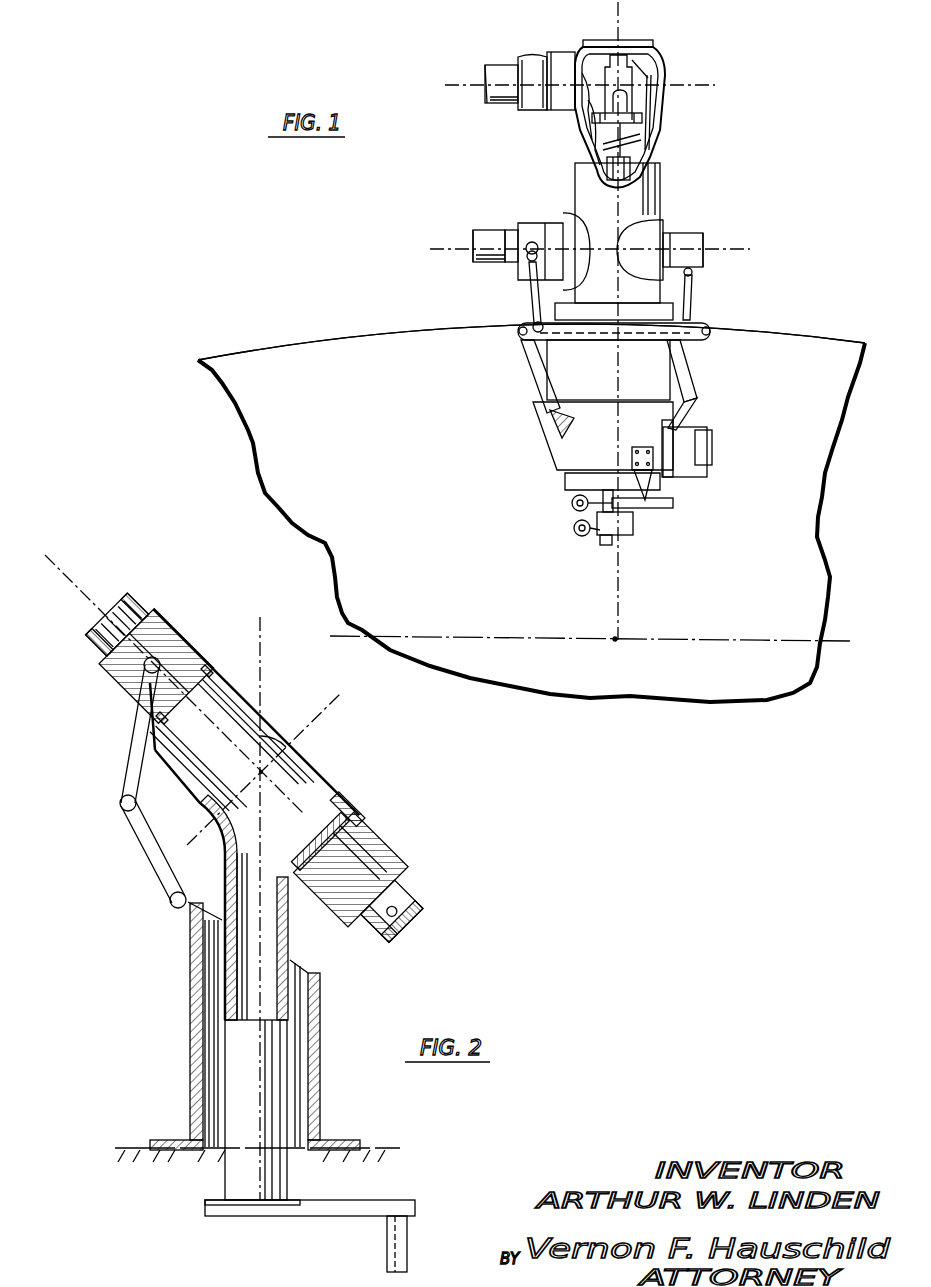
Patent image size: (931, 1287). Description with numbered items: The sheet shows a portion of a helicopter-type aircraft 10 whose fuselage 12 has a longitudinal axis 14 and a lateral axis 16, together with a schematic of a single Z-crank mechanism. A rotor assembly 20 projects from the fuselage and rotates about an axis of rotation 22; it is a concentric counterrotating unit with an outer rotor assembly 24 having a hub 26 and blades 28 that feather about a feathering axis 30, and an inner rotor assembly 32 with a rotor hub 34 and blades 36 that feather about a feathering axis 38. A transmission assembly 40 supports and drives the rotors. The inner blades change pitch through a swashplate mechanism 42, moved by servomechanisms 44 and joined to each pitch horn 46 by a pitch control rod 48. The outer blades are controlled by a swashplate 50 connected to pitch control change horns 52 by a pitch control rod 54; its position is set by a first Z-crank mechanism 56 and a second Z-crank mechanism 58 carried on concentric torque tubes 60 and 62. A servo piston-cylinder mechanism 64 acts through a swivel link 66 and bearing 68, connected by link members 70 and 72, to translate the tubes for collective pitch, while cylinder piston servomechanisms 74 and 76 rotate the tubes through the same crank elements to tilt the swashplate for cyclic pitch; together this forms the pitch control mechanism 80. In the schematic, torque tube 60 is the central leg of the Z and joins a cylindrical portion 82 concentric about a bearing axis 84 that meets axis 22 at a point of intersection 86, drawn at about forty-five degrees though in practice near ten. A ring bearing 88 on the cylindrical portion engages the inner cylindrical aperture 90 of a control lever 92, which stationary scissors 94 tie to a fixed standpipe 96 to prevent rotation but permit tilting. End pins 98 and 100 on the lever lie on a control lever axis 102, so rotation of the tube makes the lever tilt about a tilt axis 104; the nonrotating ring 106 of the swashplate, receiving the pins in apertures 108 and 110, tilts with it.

In FIG. 1, the aircraft 10 is at (775, 328).
In FIG. 1, the fuselage 12 is at (377, 440).
In FIG. 1, the longitudinal axis 14 is at (674, 640).
In FIG. 1, the lateral axis 16 is at (610, 642).
In FIG. 1, the rotor assembly 20 is at (712, 64).
In FIG. 1, the axis of rotation 22 is at (622, 32).
In FIG. 2, the axis of rotation 22 is at (257, 636).
In FIG. 1, the outer rotor assembly 24 is at (496, 58).
In FIG. 1, the hub 26 is at (577, 57).
In FIG. 1, the blades 28 is at (502, 104).
In FIG. 1, the feathering axis 30 is at (466, 82).
In FIG. 1, the inner rotor assembly 32 is at (542, 220).
In FIG. 1, the rotor hub 34 is at (661, 224).
In FIG. 1, the blades 36 is at (482, 232).
In FIG. 1, the feathering axis 38 is at (440, 251).
In FIG. 1, the transmission assembly 40 is at (655, 384).
In FIG. 1, the swashplate mechanism 42 is at (710, 340).
In FIG. 1, the servomechanisms 44 is at (530, 386).
In FIG. 1, the pitch horn 46 is at (520, 224).
In FIG. 1, the pitch control rod 48 is at (535, 293).
In FIG. 1, the swashplate 50 is at (643, 118).
In FIG. 1, the pitch control change horns 52 is at (585, 98).
In FIG. 1, the pitch control rod 54 is at (583, 101).
In FIG. 1, the first Z-crank mechanism 56 is at (648, 148).
In FIG. 2, the first Z-crank mechanism 56 is at (225, 743).
In FIG. 1, the second Z-crank mechanism 58 is at (646, 81).
In FIG. 1, the torque tube 60 is at (630, 174).
In FIG. 2, the torque tube 60 is at (290, 928).
In FIG. 1, the torque tube 62 is at (624, 101).
In FIG. 1, the servo piston-cylinder mechanism 64 is at (677, 474).
In FIG. 1, the swivel link 66 is at (658, 507).
In FIG. 1, the bearing 68 is at (628, 514).
In FIG. 1, the link member 70 is at (597, 500).
In FIG. 2, the link member 70 is at (355, 1205).
In FIG. 1, the link member 72 is at (607, 536).
In FIG. 1, the cylinder piston servomechanism 74 is at (572, 505).
In FIG. 1, the cylinder piston servomechanism 76 is at (574, 531).
In FIG. 1, the pitch control mechanism 80 is at (650, 62).
In FIG. 2, the cylindrical portion 82 is at (347, 809).
In FIG. 2, the bearing axis 84 is at (335, 700).
In FIG. 2, the point of intersection 86 is at (288, 767).
In FIG. 2, the ring bearing 88 is at (210, 670).
In FIG. 2, the inner cylindrical aperture 90 is at (323, 815).
In FIG. 2, the control lever 92 is at (347, 866).
In FIG. 2, the stationary scissors 94 is at (160, 878).
In FIG. 2, the fixed standpipe 96 is at (191, 1073).
In FIG. 2, the end pin 98 is at (156, 666).
In FIG. 2, the end pin 100 is at (402, 922).
In FIG. 2, the control lever axis 102 is at (84, 557).
In FIG. 2, the tilt axis 104 is at (262, 770).
In FIG. 2, the nonrotating ring 106 is at (392, 911).
In FIG. 2, the aperture 108 is at (117, 624).
In FIG. 2, the aperture 110 is at (392, 911).